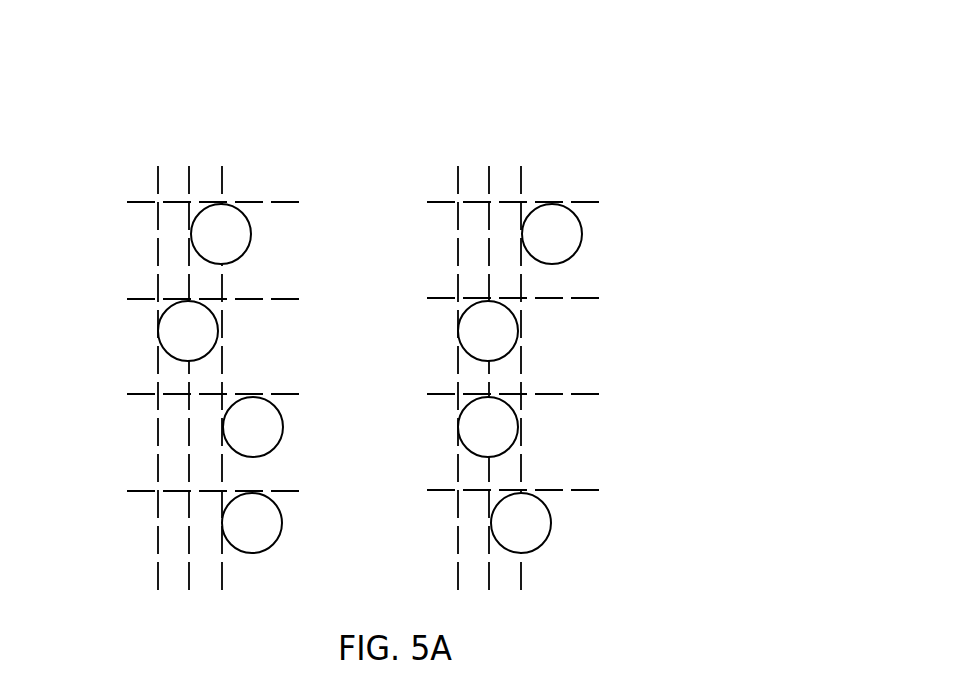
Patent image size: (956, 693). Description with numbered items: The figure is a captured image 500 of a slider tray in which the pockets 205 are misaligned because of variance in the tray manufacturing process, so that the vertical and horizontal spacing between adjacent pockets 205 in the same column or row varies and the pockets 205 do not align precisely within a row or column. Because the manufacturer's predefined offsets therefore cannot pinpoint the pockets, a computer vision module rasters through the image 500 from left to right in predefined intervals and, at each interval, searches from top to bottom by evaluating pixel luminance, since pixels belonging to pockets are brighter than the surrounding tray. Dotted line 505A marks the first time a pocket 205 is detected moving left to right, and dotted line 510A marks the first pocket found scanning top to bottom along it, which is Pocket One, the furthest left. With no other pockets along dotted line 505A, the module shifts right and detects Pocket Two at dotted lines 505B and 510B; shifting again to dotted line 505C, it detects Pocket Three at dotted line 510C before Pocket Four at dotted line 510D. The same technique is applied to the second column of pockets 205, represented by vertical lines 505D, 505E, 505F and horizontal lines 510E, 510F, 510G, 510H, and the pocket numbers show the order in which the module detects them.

The captured image 500 is at (622, 110).
The pocket 205 is at (252, 230).
The dotted line 505A is at (158, 166).
The dotted line 505B is at (189, 166).
The dotted line 505C is at (222, 166).
The vertical line 505D is at (458, 166).
The vertical line 505E is at (489, 166).
The vertical line 505F is at (521, 166).
The dotted line 510A is at (302, 299).
The dotted line 510B is at (302, 202).
The dotted line 510C is at (302, 394).
The dotted line 510D is at (302, 491).
The horizontal line 510E is at (602, 298).
The horizontal line 510F is at (602, 394).
The horizontal line 510G is at (602, 490).
The horizontal line 510H is at (602, 202).